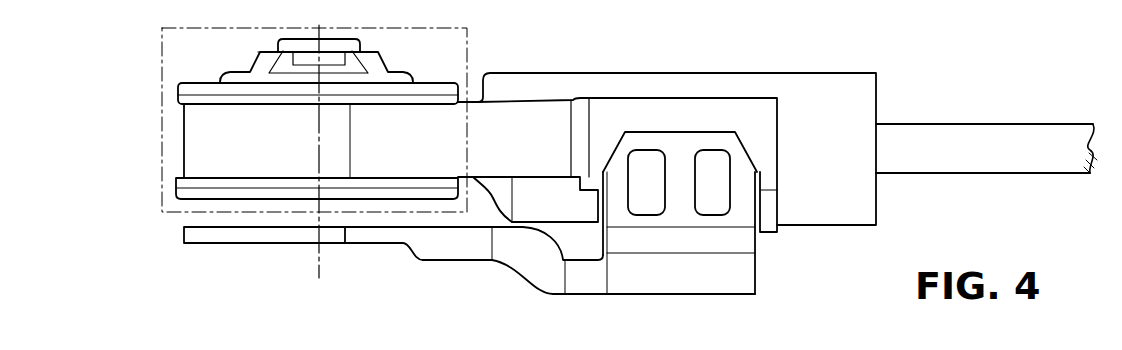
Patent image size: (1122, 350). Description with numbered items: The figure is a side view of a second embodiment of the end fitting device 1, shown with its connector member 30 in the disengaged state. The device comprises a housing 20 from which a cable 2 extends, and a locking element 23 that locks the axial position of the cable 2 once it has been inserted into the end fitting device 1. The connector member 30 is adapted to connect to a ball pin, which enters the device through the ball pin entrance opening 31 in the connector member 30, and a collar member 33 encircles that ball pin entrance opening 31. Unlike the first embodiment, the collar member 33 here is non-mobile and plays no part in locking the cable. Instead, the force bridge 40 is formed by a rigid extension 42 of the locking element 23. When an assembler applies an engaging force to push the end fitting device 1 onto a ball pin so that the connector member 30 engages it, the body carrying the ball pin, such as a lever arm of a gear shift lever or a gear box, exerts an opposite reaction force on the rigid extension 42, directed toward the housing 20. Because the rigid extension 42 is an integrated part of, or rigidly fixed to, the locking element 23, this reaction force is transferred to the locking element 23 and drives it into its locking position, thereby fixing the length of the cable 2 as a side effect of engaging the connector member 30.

The end fitting device 1 is at (175, 265).
The cable 2 is at (980, 143).
The housing 20 is at (525, 127).
The locking element 23 is at (733, 268).
The connector member 30 is at (162, 137).
The ball pin entrance opening 31 is at (285, 206).
The collar member 33 is at (172, 185).
The force bridge 40 is at (482, 265).
The rigid extension 42 is at (470, 248).